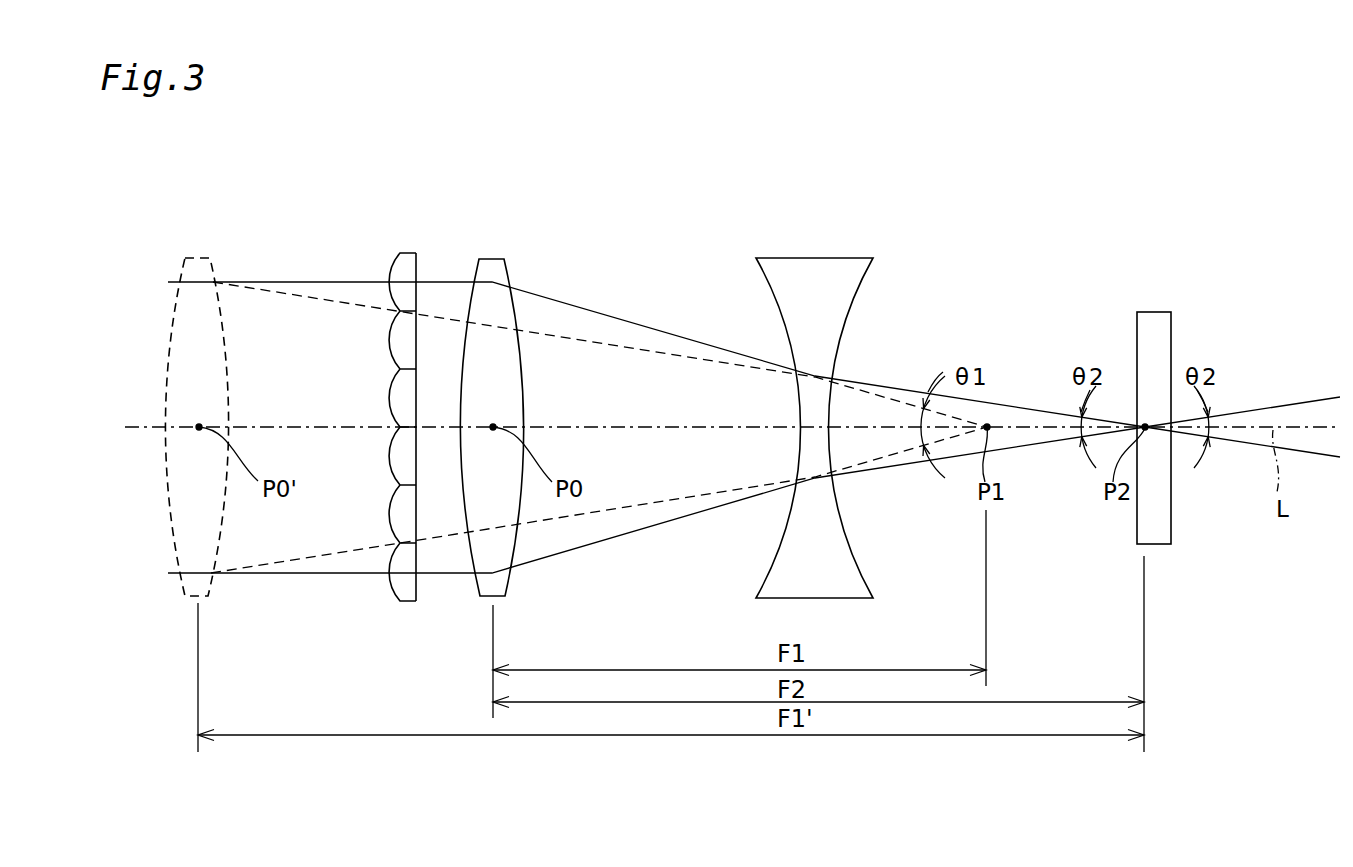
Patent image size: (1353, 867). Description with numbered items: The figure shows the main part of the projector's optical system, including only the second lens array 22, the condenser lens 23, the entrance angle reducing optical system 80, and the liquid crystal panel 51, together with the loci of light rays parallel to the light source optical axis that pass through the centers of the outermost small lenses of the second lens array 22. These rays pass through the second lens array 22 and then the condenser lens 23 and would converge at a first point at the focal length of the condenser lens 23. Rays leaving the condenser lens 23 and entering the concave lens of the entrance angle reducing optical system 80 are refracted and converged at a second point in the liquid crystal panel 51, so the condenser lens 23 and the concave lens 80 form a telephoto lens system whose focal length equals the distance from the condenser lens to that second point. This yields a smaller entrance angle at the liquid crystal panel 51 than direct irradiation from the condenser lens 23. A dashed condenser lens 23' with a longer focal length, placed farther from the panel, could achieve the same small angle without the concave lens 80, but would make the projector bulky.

The condenser lens having a relatively long focal length 23' is at (196, 384).
The second lens array 22 is at (410, 253).
The condenser lens 23 is at (492, 384).
The entrance angle reducing optical system 80 is at (812, 258).
The liquid crystal panel 51 is at (1150, 312).